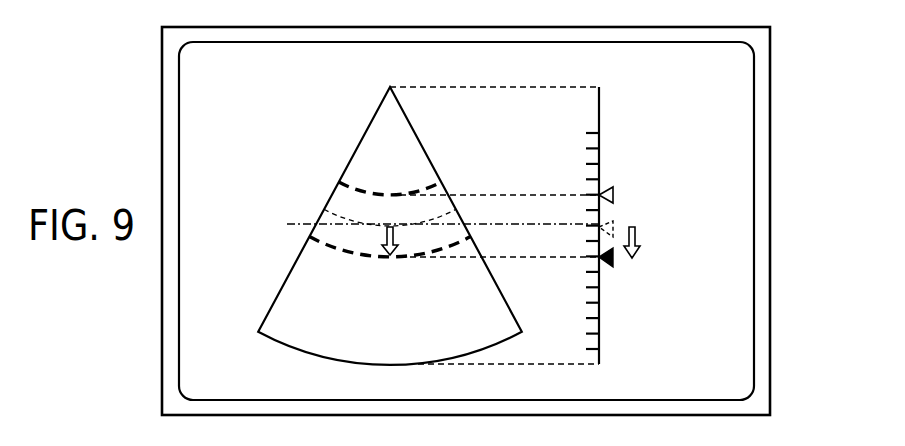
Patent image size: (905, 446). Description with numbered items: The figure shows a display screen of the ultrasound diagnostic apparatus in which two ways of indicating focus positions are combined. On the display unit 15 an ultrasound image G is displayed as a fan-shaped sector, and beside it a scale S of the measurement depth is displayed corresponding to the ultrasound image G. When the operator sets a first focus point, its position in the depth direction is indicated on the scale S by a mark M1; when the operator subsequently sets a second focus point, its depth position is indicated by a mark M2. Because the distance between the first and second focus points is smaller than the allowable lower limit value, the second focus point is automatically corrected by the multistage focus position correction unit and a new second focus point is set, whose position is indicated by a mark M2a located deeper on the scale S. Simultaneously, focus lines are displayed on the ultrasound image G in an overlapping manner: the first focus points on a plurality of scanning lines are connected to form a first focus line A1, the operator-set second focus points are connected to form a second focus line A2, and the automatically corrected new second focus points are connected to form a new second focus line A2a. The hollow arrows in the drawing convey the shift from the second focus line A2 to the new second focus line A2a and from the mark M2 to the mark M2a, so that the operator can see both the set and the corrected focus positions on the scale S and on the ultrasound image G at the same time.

The display unit 15 is at (770, 182).
The ultrasound image G is at (413, 128).
The scale S is at (615, 125).
The first focus line A1 is at (362, 190).
The second focus line A2 is at (348, 223).
The new second focus line A2a is at (332, 248).
The mark M1 is at (613, 190).
The mark M2 is at (613, 221).
The mark M2a is at (613, 257).